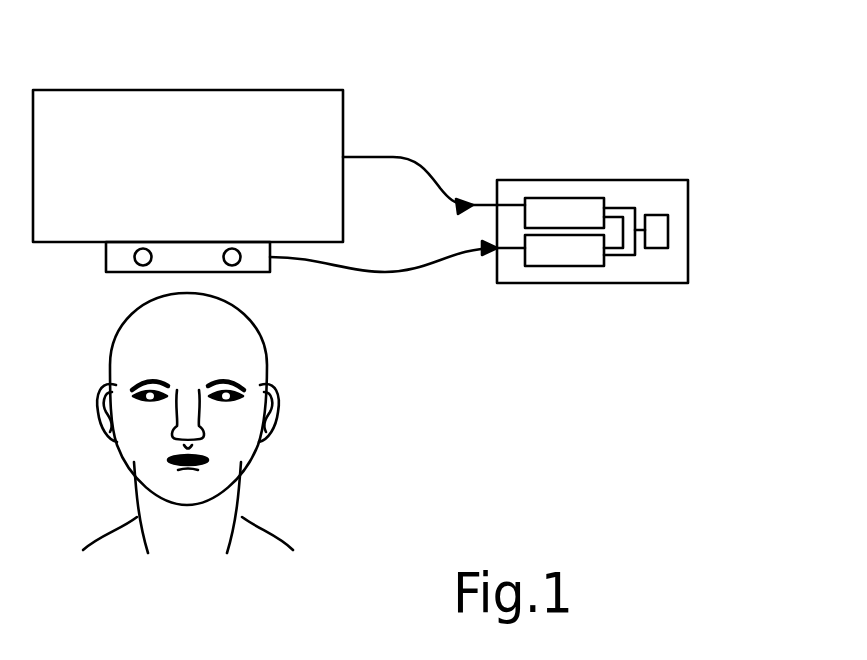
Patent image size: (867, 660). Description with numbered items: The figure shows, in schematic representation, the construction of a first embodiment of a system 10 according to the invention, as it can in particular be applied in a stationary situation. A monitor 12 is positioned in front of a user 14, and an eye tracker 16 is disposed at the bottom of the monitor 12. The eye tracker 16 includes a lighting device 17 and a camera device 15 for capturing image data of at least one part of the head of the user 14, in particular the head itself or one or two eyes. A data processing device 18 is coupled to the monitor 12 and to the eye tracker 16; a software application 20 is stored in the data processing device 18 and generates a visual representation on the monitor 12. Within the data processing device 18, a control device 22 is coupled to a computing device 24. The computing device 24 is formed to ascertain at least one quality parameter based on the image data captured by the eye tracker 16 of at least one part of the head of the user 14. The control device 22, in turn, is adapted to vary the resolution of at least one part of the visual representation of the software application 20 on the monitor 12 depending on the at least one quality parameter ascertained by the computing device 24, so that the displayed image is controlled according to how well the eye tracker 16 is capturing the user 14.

The system 10 is at (411, 83).
The monitor 12 is at (240, 107).
The user 14 is at (121, 369).
The camera device 15 is at (233, 262).
The eye tracker 16 is at (112, 258).
The lighting device 17 is at (142, 262).
The data processing device 18 is at (656, 193).
The software application 20 is at (668, 230).
The control device 22 is at (565, 207).
The computing device 24 is at (565, 253).